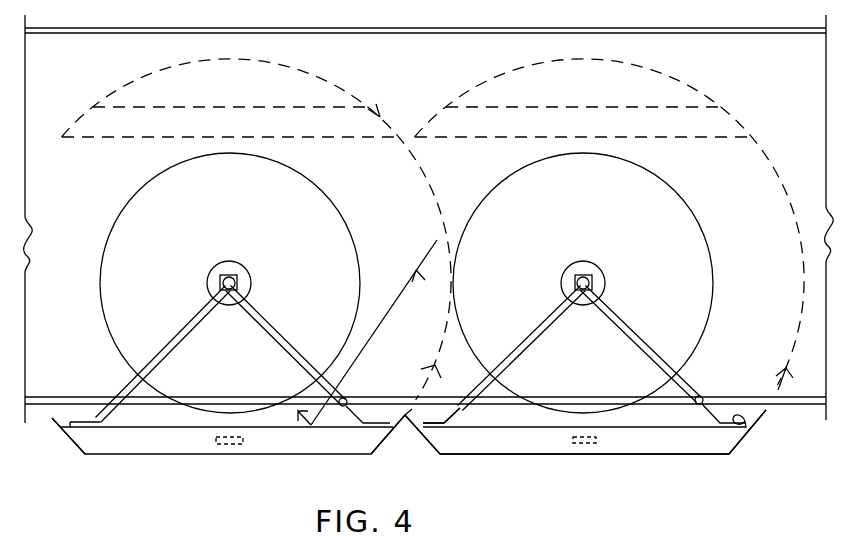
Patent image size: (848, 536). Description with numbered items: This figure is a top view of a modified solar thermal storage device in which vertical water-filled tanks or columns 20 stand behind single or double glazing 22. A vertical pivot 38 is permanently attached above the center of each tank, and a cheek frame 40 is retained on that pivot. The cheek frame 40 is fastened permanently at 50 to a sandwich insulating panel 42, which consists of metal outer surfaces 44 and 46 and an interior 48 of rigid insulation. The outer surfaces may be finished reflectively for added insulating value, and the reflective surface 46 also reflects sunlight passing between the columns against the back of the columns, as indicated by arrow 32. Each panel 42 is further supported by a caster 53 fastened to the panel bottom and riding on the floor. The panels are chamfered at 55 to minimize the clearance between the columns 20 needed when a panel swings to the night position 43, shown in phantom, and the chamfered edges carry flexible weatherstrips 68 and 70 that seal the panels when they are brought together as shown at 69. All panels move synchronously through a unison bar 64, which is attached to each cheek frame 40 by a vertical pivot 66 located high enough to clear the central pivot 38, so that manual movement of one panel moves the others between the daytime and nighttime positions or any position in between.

The water filled tank 20 is at (316, 182).
The glazing 22 is at (380, 28).
The arrow 32 is at (372, 340).
The vertical pivot 38 is at (243, 275).
The cheek frame 40 is at (606, 292).
The sandwich insulating panel 42 is at (661, 453).
The night position 43 is at (390, 110).
The metal outer surface 44 is at (515, 454).
The metal outer surface 46 is at (496, 420).
The interior of rigid insulation 48 is at (618, 442).
The fastening point 50 is at (745, 428).
The caster 53 is at (233, 447).
The chamfer 55 is at (382, 446).
The unison bar 64 is at (729, 394).
The vertical pivot 66 is at (703, 394).
The flexible weatherstrip 68 is at (52, 418).
The sealed panel junction 69 is at (405, 418).
The flexible weatherstrip 70 is at (758, 420).